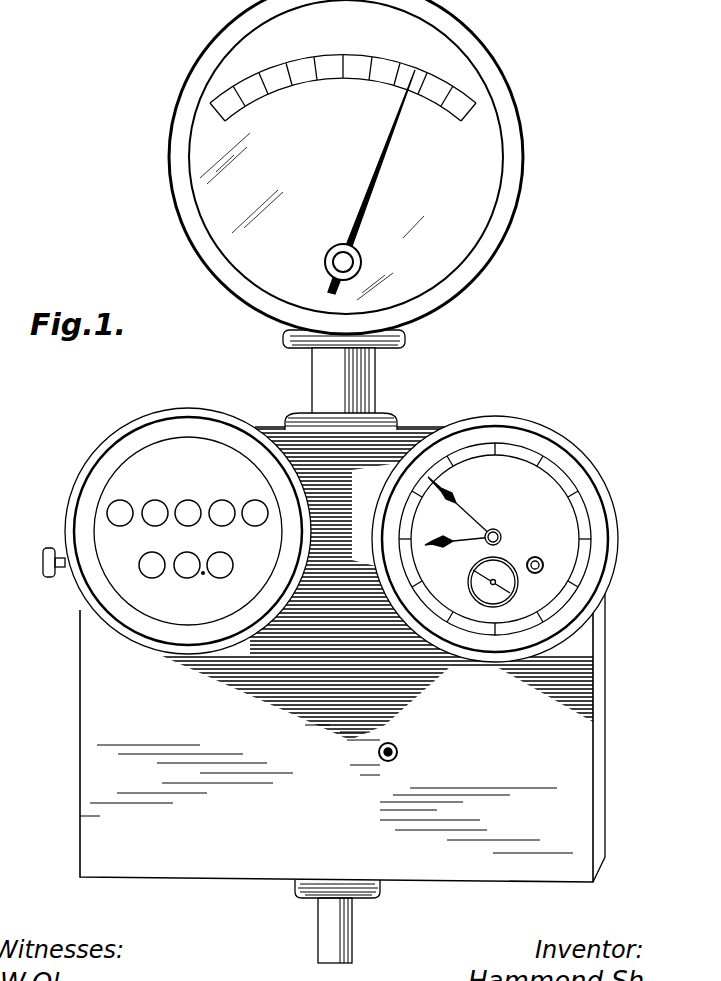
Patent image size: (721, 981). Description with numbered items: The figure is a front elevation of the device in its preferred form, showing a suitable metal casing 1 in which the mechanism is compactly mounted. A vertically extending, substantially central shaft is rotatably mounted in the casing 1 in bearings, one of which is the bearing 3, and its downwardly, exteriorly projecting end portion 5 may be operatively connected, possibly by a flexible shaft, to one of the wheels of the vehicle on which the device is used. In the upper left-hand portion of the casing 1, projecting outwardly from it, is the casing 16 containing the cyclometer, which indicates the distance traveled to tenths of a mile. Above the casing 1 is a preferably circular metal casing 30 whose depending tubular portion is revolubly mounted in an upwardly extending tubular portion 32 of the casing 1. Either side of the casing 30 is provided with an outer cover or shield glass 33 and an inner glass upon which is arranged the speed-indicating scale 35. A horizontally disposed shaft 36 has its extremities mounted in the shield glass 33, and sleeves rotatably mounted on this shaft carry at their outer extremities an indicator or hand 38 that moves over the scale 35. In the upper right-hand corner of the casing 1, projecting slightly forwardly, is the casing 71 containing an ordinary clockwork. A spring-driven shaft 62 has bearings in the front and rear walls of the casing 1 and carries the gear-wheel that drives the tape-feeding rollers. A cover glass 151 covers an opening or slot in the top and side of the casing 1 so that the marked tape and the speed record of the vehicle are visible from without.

The casing 1 is at (567, 773).
The bearing 3 is at (370, 893).
The exteriorly projecting end portion of shaft 5 is at (360, 940).
The cyclometer casing 16 is at (160, 612).
The circular metal casing 30 is at (508, 158).
The upwardly extending tubular portion 32 is at (372, 384).
The outer cover or shield glass 33 is at (465, 226).
The speed-indicating scale 35 is at (377, 90).
The shaft 36 is at (352, 265).
The indicator or hand 38 is at (360, 222).
The shaft 62 is at (400, 752).
The clockwork casing 71 is at (549, 586).
The cover glass 151 is at (607, 715).